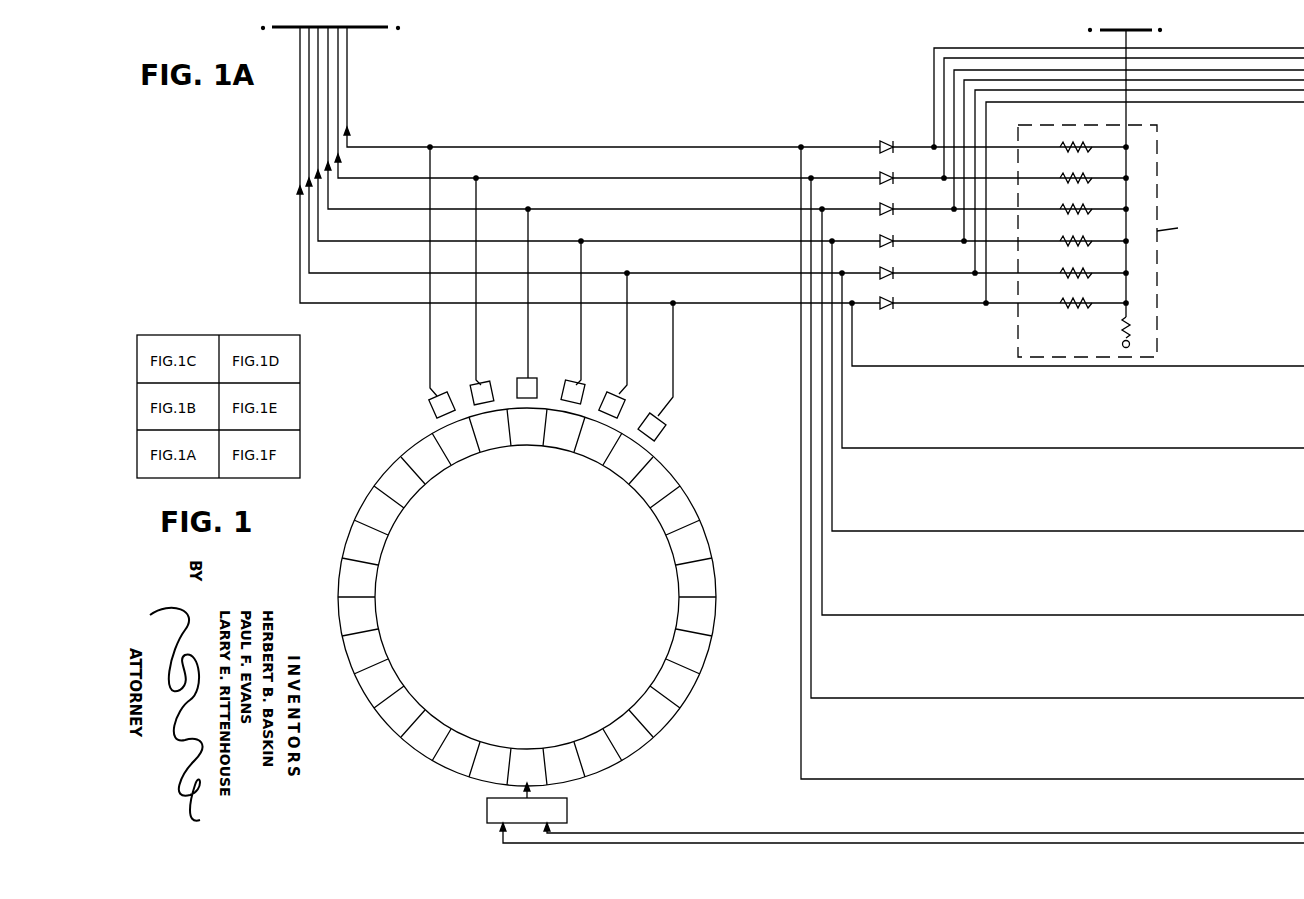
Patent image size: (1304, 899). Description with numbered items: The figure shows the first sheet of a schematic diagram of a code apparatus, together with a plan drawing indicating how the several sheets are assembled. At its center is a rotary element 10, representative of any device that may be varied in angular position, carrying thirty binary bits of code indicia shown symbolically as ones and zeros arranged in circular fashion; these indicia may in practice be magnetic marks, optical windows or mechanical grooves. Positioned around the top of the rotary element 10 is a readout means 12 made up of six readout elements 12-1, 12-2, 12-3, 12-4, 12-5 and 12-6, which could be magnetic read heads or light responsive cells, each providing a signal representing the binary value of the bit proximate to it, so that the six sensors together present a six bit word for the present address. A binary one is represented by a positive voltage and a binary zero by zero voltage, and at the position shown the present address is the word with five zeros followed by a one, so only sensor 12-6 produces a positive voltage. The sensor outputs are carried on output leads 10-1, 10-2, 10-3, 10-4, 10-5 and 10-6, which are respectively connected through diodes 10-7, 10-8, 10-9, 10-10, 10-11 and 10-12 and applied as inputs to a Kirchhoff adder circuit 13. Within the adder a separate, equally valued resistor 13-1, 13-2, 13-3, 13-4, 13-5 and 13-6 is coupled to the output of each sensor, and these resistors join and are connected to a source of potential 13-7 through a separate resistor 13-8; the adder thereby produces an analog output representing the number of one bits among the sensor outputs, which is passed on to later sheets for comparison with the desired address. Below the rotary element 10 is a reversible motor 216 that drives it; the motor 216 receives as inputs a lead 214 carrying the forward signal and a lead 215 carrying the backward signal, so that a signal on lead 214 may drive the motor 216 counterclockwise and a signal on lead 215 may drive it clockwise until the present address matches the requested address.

The rotary element 10 is at (718, 598).
The output lead 10-1 is at (349, 54).
The output lead 10-2 is at (338, 75).
The output lead 10-3 is at (328, 100).
The output lead 10-4 is at (318, 122).
The output lead 10-5 is at (309, 222).
The output lead 10-6 is at (300, 272).
The diode 10-7 is at (893, 145).
The diode 10-8 is at (890, 175).
The diode 10-9 is at (892, 206).
The diode 10-10 is at (893, 238).
The diode 10-11 is at (894, 270).
The diode 10-12 is at (893, 300).
The readout means 12 is at (507, 400).
The readout element 12-1 is at (432, 394).
The readout element 12-2 is at (476, 384).
The readout element 12-3 is at (517, 381).
The readout element 12-4 is at (566, 386).
The readout element 12-5 is at (606, 394).
The readout element 12-6 is at (650, 413).
The Kirchhoff adder circuit 13 is at (1135, 193).
The resistor 13-1 is at (1064, 154).
The resistor 13-2 is at (1068, 184).
The resistor 13-3 is at (1068, 215).
The resistor 13-4 is at (1068, 247).
The resistor 13-5 is at (1068, 279).
The resistor 13-6 is at (1064, 309).
The source of potential 13-7 is at (1131, 344).
The separate resistor 13-8 is at (1131, 323).
The lead 214 is at (1196, 842).
The lead 215 is at (1254, 834).
The reversible motor 216 is at (568, 810).